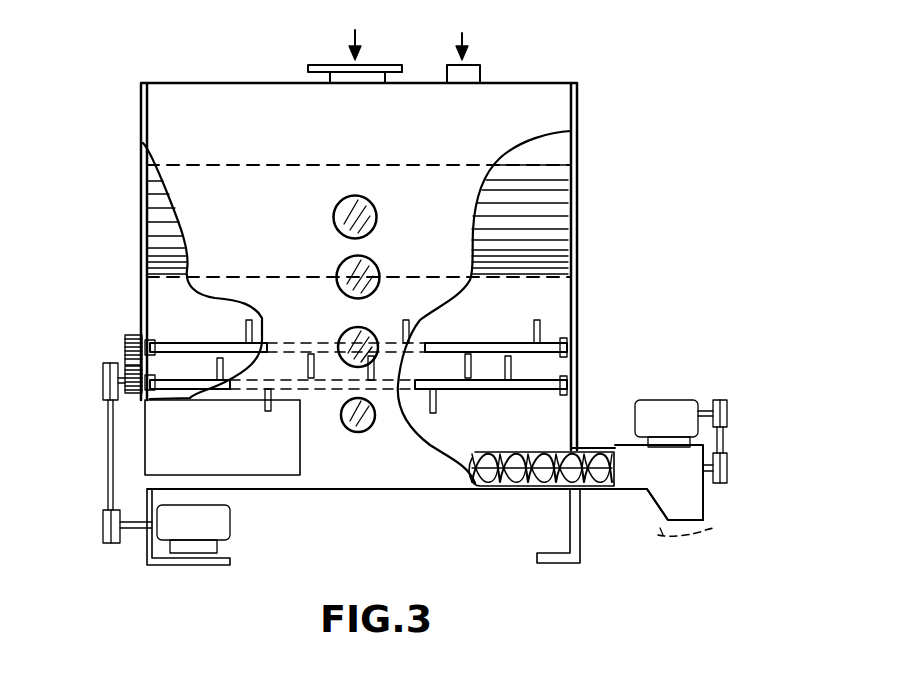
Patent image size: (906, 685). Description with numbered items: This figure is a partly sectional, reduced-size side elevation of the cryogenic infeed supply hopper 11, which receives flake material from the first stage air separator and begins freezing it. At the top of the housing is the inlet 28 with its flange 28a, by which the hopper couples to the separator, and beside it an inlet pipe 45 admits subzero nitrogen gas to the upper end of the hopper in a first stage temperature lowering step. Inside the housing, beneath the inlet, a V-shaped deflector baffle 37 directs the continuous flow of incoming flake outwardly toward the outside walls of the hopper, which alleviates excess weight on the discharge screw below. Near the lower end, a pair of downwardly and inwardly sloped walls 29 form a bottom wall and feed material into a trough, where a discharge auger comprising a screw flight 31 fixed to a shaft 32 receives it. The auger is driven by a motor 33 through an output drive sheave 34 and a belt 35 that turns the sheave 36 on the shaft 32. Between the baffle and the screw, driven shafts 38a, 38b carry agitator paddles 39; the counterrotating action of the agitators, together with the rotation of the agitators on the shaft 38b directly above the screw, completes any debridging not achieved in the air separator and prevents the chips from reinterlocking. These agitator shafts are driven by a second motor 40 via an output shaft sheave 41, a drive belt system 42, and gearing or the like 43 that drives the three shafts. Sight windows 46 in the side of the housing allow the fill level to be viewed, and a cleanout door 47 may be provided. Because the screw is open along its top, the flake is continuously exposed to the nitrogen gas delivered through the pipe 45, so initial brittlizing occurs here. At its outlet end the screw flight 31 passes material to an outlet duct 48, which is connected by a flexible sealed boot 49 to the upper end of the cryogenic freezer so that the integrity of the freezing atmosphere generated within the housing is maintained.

The cryogenic infeed supply hopper 11 is at (578, 162).
The inlet 28 is at (307, 71).
The flange 28a is at (403, 65).
The downwardly and inwardly sloped walls 29 is at (540, 438).
The screw flight 31 is at (518, 489).
The shaft 32 is at (548, 490).
The motor 33 is at (640, 414).
The output drive sheave 34 is at (727, 413).
The belt 35 is at (725, 441).
The sheave 36 is at (727, 470).
The V-shaped deflector baffle 37 is at (546, 199).
The driven shaft 38a is at (483, 344).
The driven shaft 38b is at (356, 400).
The agitator paddles 39 is at (527, 323).
The second motor 40 is at (230, 520).
The output shaft sheave 41 is at (103, 530).
The drive belt system 42 is at (105, 479).
The gearing 43 is at (120, 351).
The inlet pipe 45 is at (481, 73).
The sight windows 46 is at (376, 268).
The cleanout door 47 is at (256, 456).
The outlet duct 48 is at (703, 497).
The flexible sealed boot 49 is at (713, 530).